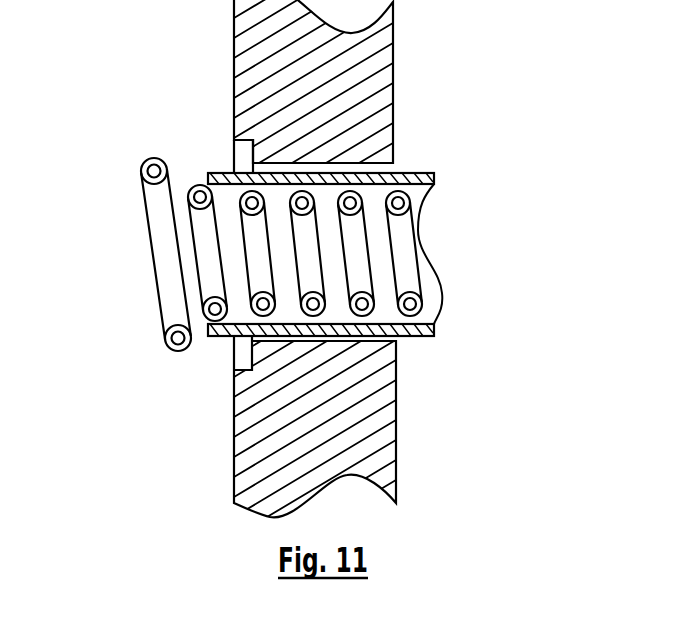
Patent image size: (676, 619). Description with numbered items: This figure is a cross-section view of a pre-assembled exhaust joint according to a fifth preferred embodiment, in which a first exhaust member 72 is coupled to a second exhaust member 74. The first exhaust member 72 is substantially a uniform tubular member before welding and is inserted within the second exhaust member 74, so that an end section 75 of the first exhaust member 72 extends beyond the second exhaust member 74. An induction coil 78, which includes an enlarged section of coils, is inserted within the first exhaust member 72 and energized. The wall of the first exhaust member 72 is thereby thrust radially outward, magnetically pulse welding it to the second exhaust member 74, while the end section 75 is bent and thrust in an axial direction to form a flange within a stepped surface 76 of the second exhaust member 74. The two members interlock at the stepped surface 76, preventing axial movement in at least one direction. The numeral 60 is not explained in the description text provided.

The upper support wall 60 is at (245, 157).
The first exhaust member 72 is at (433, 175).
The second exhaust member 74 is at (267, 422).
The end section 75 is at (219, 337).
The stepped surface 76 is at (240, 138).
The induction coil 78 is at (397, 247).